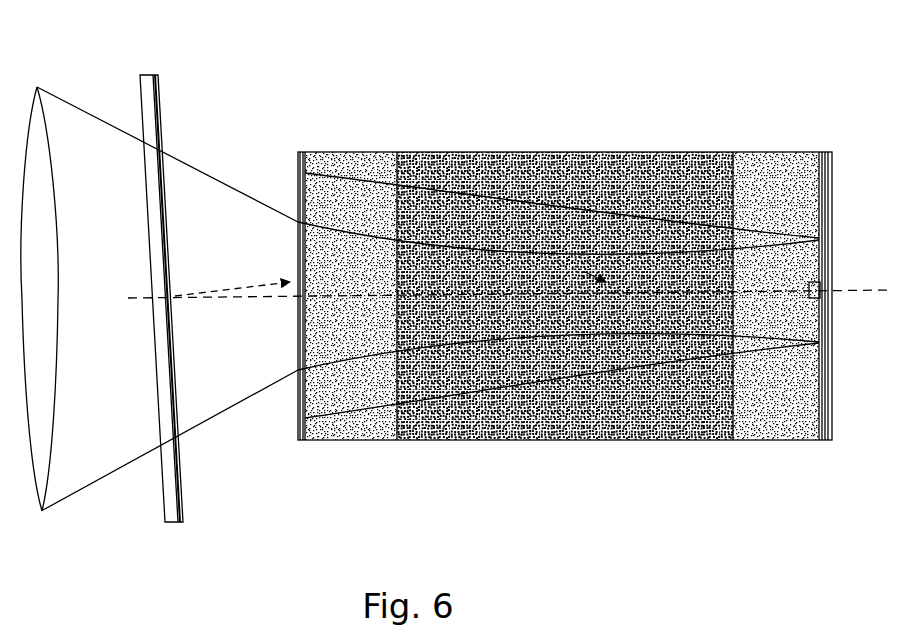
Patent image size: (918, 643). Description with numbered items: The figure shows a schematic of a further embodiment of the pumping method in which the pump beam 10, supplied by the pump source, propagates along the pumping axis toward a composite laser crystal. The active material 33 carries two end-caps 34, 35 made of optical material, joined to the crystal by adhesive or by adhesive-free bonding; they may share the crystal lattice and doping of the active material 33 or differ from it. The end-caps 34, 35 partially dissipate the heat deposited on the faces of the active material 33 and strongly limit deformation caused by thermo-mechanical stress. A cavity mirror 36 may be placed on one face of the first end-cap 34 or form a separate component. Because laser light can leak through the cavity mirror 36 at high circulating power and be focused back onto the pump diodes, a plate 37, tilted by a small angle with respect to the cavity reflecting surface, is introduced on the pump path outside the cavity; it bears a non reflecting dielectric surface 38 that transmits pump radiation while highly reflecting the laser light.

The pump beam 10 is at (93, 483).
The active material 33 is at (578, 426).
The first end-cap 34 is at (353, 428).
The second end-cap 35 is at (783, 424).
The cavity mirror 36 is at (298, 406).
The plate 37 is at (146, 97).
The non reflecting dielectric surface 38 is at (163, 128).